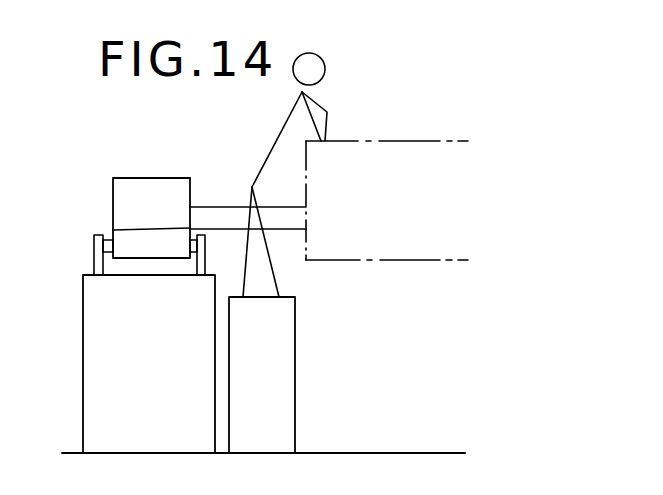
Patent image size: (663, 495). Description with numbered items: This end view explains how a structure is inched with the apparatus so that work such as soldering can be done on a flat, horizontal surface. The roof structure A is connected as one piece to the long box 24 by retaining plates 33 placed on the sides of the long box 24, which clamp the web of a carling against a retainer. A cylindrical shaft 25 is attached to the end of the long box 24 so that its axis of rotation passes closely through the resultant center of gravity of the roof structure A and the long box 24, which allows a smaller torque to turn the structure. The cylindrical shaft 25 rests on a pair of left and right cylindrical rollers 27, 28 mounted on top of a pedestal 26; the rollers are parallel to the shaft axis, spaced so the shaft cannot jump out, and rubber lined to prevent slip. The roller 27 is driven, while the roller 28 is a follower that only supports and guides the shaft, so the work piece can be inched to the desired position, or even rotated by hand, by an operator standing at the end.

The cylindrical shaft 25 is at (149, 178).
The long box 24 is at (217, 207).
The cylindrical roller 27 is at (123, 238).
The cylindrical roller 28 is at (124, 226).
The pedestal 26 is at (83, 325).
The retaining plate 33 is at (289, 360).
The roof structure A is at (414, 141).